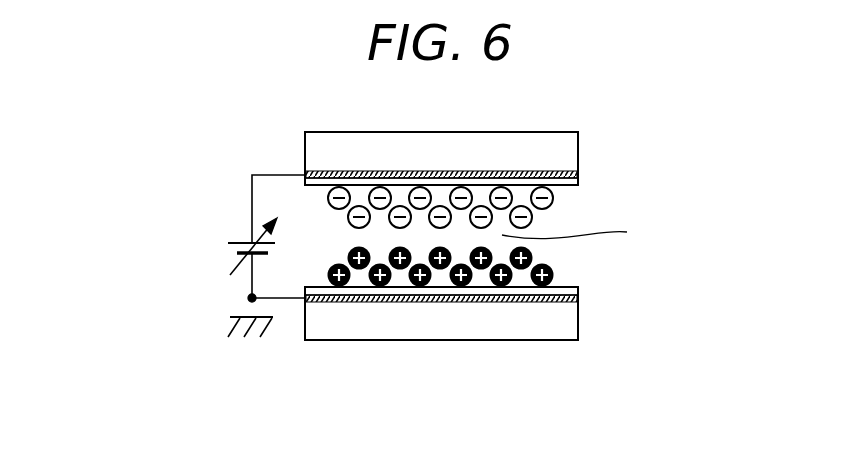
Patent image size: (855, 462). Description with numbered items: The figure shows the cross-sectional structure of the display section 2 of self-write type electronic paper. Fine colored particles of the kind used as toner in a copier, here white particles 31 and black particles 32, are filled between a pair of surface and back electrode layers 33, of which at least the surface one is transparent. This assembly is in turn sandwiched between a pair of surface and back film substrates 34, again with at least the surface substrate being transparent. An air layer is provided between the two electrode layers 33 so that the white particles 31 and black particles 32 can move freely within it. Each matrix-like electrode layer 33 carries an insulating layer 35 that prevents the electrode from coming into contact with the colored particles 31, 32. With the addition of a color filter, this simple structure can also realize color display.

The display section 2 is at (312, 124).
The white particles 31 is at (552, 202).
The black particles 32 is at (552, 268).
The electrode layer 33 is at (578, 173).
The film substrate 34 is at (570, 150).
The insulating layer 35 is at (578, 182).